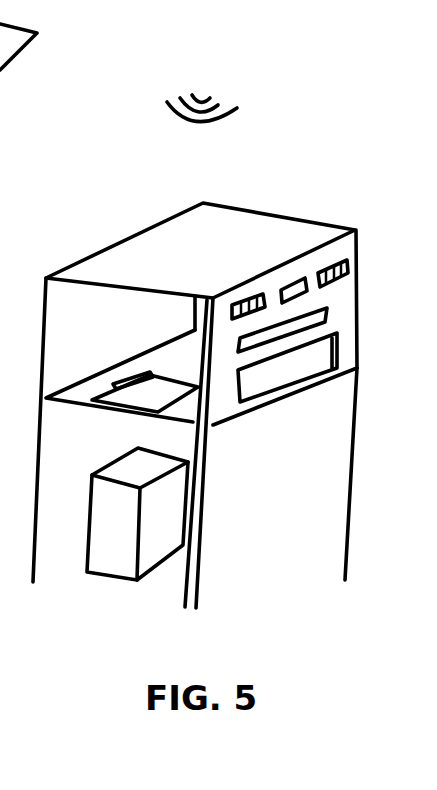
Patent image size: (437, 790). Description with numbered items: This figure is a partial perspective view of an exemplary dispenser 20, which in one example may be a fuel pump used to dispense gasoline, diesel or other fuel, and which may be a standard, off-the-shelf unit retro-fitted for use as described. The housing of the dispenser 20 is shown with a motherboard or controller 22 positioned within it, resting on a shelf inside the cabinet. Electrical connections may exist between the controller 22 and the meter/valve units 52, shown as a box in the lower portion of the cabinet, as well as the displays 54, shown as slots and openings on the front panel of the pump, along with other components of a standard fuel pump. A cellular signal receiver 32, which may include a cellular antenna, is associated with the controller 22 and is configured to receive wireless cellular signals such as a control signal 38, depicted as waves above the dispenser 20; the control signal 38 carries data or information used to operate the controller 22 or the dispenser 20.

The dispenser 20 is at (383, 219).
The controller 22 is at (146, 394).
The cellular signal receiver 32 is at (135, 375).
The control signal 38 is at (199, 93).
The meter/valve units 52 is at (120, 563).
The displays 54 is at (343, 291).